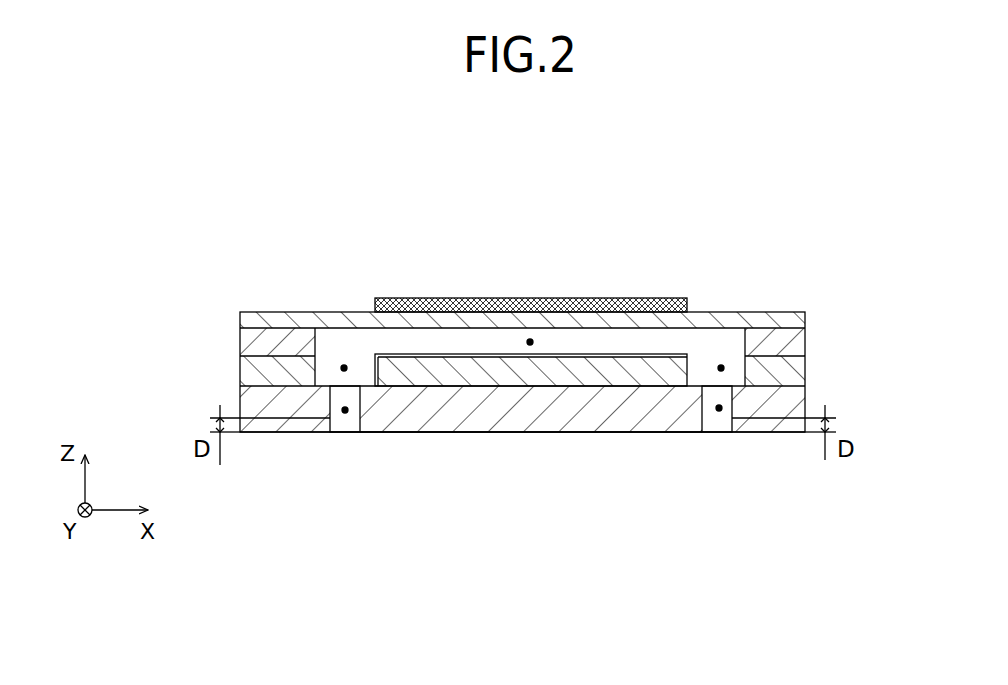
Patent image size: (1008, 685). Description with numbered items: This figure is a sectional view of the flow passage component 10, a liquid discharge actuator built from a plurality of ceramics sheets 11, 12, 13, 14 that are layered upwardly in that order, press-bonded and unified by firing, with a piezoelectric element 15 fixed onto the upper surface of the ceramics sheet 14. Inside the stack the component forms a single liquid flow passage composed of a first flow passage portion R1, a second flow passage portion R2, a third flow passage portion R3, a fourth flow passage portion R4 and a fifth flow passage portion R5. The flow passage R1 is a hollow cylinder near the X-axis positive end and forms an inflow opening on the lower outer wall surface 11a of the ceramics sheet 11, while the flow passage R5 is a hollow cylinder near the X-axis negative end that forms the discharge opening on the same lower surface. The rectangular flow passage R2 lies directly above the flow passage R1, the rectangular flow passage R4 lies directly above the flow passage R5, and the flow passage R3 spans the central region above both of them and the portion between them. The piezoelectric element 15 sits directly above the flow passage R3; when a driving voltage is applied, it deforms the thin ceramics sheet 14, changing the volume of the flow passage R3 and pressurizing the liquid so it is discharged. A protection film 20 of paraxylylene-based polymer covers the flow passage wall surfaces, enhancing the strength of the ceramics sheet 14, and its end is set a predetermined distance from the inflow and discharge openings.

The flow passage component 10 is at (799, 236).
The ceramics sheet 11 is at (806, 404).
The lower outer wall surface 11a is at (538, 433).
The ceramics sheet 12 is at (805, 373).
The ceramics sheet 13 is at (805, 345).
The ceramics sheet 14 is at (805, 316).
The piezoelectric element 15 is at (625, 297).
The protection film 20 is at (470, 340).
The first flow passage portion R1 is at (719, 411).
The second flow passage portion R2 is at (721, 365).
The third flow passage portion R3 is at (530, 339).
The fourth flow passage portion R4 is at (344, 365).
The fifth flow passage portion R5 is at (345, 413).